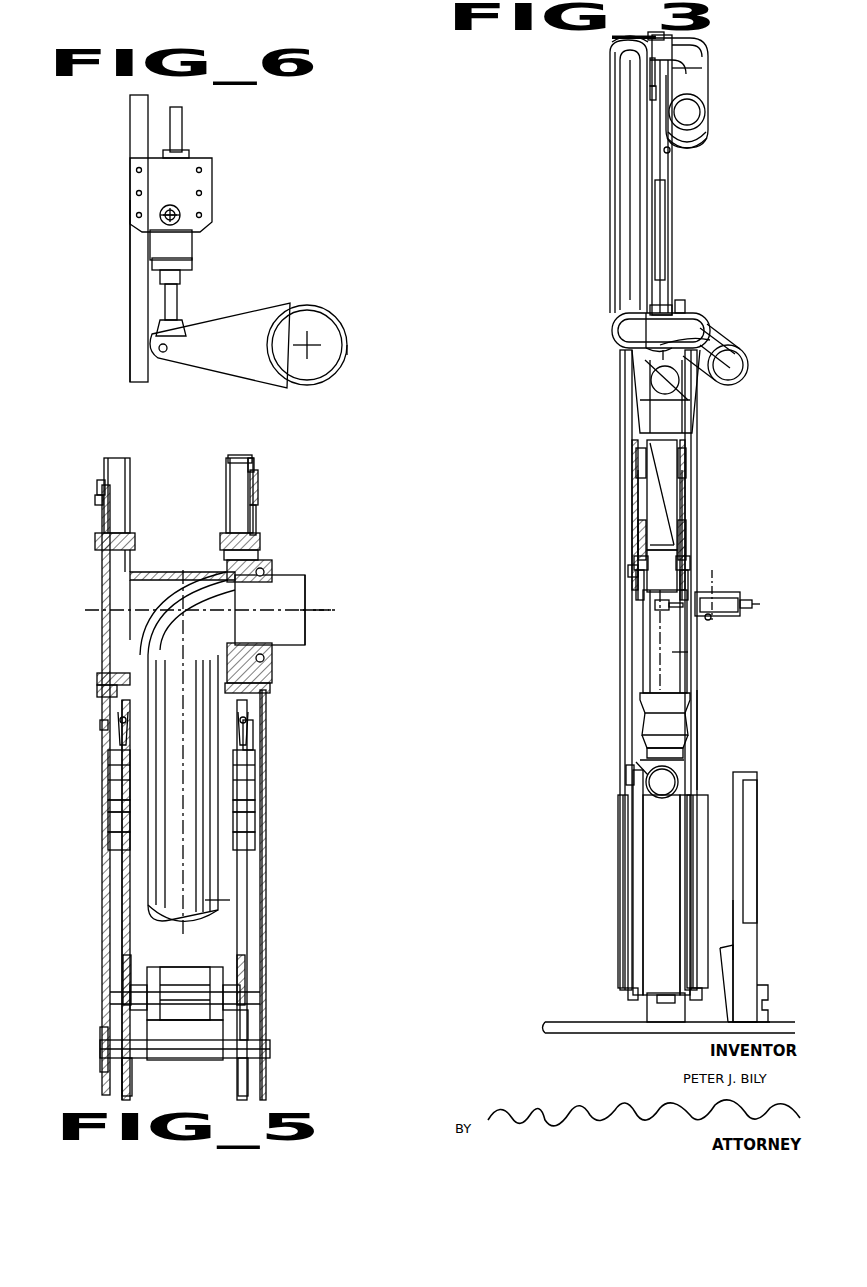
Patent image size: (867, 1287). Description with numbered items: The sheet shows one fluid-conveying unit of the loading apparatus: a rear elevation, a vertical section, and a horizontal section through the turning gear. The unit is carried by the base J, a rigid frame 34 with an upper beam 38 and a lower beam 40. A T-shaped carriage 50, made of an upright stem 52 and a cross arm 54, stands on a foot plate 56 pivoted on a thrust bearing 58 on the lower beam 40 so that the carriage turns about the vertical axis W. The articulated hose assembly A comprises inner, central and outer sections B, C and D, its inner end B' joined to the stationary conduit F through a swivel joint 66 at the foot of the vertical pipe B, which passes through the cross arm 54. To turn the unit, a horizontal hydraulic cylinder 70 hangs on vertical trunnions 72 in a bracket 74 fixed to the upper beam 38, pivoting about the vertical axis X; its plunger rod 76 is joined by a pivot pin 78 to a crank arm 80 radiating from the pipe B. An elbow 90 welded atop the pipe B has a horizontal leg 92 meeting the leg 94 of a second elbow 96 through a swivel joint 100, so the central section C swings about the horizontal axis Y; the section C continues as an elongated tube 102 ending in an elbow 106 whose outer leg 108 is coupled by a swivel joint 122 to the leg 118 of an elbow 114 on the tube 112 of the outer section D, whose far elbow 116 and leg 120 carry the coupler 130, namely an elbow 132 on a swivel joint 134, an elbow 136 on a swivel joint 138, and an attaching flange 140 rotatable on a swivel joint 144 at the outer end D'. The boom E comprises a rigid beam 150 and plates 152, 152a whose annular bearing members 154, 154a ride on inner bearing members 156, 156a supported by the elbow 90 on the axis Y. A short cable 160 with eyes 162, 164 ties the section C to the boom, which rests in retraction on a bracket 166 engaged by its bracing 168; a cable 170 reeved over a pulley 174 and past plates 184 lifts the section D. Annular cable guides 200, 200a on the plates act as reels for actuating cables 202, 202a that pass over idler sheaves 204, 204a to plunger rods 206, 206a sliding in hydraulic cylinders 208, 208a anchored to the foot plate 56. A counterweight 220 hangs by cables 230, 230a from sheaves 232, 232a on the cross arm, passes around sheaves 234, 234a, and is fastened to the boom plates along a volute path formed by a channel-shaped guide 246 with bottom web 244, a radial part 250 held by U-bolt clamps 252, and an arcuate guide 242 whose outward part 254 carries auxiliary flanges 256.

In FIG. 6, the rigid frame 34 is at (128, 121).
In FIG. 3, the rigid frame 34 is at (760, 882).
In FIG. 6, the upper beam 38 is at (140, 297).
In FIG. 3, the lower beam 40 is at (595, 1027).
In FIG. 5, the T-shaped carriage 50 is at (220, 1020).
In FIG. 5, the stem 52 is at (213, 1050).
In FIG. 3, the stem 52 is at (662, 870).
In FIG. 5, the cross arm 54 is at (205, 1025).
In FIG. 3, the cross arm 54 is at (646, 556).
In FIG. 3, the foot plate 56 is at (650, 1010).
In FIG. 3, the thrust bearing 58 is at (664, 995).
In FIG. 3, the swivel joint 66 is at (676, 723).
In FIG. 6, the hydraulic cylinder 70 is at (176, 242).
In FIG. 3, the hydraulic cylinder 70 is at (722, 603).
In FIG. 6, the vertical trunnions 72 is at (160, 214).
In FIG. 3, the vertical trunnions 72 is at (708, 620).
In FIG. 6, the bracket 74 is at (182, 168).
In FIG. 3, the bracket 74 is at (722, 592).
In FIG. 6, the plunger rod 76 is at (172, 302).
In FIG. 3, the plunger rod 76 is at (752, 605).
In FIG. 6, the pivot pin 78 is at (168, 348).
In FIG. 6, the crank arm 80 is at (255, 321).
In FIG. 3, the crank arm 80 is at (650, 610).
In FIG. 5, the 90° elbow 90 is at (160, 608).
In FIG. 5, the horizontal leg 92 is at (218, 578).
In FIG. 5, the horizontal laterally projecting leg 94 is at (272, 580).
In FIG. 5, the 90° elbow 96 is at (306, 625).
In FIG. 5, the swivel joint 100 is at (270, 568).
In FIG. 3, the elongated metal tube 102 is at (745, 364).
In FIG. 3, the elbow 106 is at (702, 328).
In FIG. 3, the outer leg 108 is at (668, 320).
In FIG. 3, the elongated metal tube 112 is at (618, 145).
In FIG. 3, the elbow 114 is at (620, 322).
In FIG. 3, the elbow 116 is at (622, 58).
In FIG. 3, the laterally projecting leg 118 is at (640, 334).
In FIG. 3, the laterally projecting leg 120 is at (625, 38).
In FIG. 3, the swivel joint 122 is at (630, 338).
In FIG. 3, the coupler 130 is at (712, 96).
In FIG. 3, the elbow 132 is at (697, 52).
In FIG. 3, the swivel joint 134 is at (690, 38).
In FIG. 3, the elbow 136 is at (688, 110).
In FIG. 3, the swivel joint 138 is at (690, 76).
In FIG. 3, the attaching flange 140 is at (705, 142).
In FIG. 3, the swivel joint 144 is at (702, 130).
In FIG. 3, the rigid beam 150 is at (663, 215).
In FIG. 5, the plate 152 is at (255, 515).
In FIG. 5, the plate 152a is at (110, 505).
In FIG. 5, the annular bearing member 154 is at (240, 535).
In FIG. 5, the annular bearing member 154a is at (118, 533).
In FIG. 5, the inner bearing member 156 is at (232, 552).
In FIG. 5, the inner bearing member 156a is at (120, 541).
In FIG. 3, the cable 160 is at (670, 236).
In FIG. 3, the eye 162 is at (670, 152).
In FIG. 3, the eye 164 is at (676, 302).
In FIG. 5, the bracket 166 is at (157, 978).
In FIG. 3, the bracket 166 is at (675, 440).
In FIG. 3, the bracing 168 is at (695, 420).
In FIG. 3, the cable 170 is at (650, 70).
In FIG. 3, the pulley 174 is at (650, 92).
In FIG. 3, the plates 184 is at (656, 253).
In FIG. 5, the cable guide 200 is at (258, 500).
In FIG. 3, the cable guide 200 is at (698, 395).
In FIG. 5, the cable guide 200a is at (98, 497).
In FIG. 3, the cable guide 200a is at (620, 392).
In FIG. 5, the actuating cable 202 is at (258, 478).
In FIG. 3, the actuating cable 202 is at (690, 500).
In FIG. 5, the actuating cable 202a is at (103, 482).
In FIG. 3, the actuating cable 202a is at (630, 450).
In FIG. 5, the idler sheave 204 is at (260, 1030).
In FIG. 3, the idler sheave 204 is at (690, 560).
In FIG. 5, the idler sheave 204a is at (103, 1062).
In FIG. 3, the idler sheave 204a is at (630, 572).
In FIG. 3, the plunger rod 206 is at (700, 708).
In FIG. 3, the plunger rod 206a is at (628, 786).
In FIG. 3, the hydraulic cylinder 208 is at (700, 810).
In FIG. 3, the hydraulic cylinder 208a is at (628, 850).
In FIG. 3, the counterweight 220 is at (640, 892).
In FIG. 5, the cable 230 is at (296, 952).
In FIG. 3, the cable 230 is at (686, 490).
In FIG. 5, the cable 230a is at (124, 882).
In FIG. 3, the cable 230a is at (636, 510).
In FIG. 5, the sheave 232 is at (250, 1082).
In FIG. 3, the sheave 232 is at (690, 585).
In FIG. 5, the sheave 232a is at (133, 1075).
In FIG. 3, the sheave 232a is at (638, 580).
In FIG. 5, the sheave 234 is at (247, 978).
In FIG. 3, the sheave 234 is at (688, 525).
In FIG. 5, the sheave 234a is at (133, 975).
In FIG. 3, the sheave 234a is at (636, 532).
In FIG. 5, the cable guide 242 is at (256, 770).
In FIG. 3, the cable guide 242 is at (690, 462).
In FIG. 5, the bottom web 244 is at (240, 468).
In FIG. 5, the channel-shaped guide 246 is at (255, 462).
In FIG. 5, the radially extending part 250 is at (247, 716).
In FIG. 5, the U-bolt clamps 252 is at (250, 754).
In FIG. 5, the outwardly projecting part 254 is at (250, 822).
In FIG. 5, the auxiliary flanges 256 is at (256, 840).
In FIG. 3, the hose assembly A is at (712, 262).
In FIG. 6, the inner hose section B is at (383, 357).
In FIG. 5, the inner hose section B is at (268, 911).
In FIG. 3, the inner hose section B is at (722, 643).
In FIG. 3, the inner end of hose assembly B' is at (702, 641).
In FIG. 3, the central hose section C is at (733, 338).
In FIG. 3, the outer hose section D is at (593, 176).
In FIG. 3, the outer end of hose assembly D' is at (593, 180).
In FIG. 3, the boom E is at (655, 190).
In FIG. 3, the conduit F is at (640, 765).
In FIG. 3, the base J is at (760, 848).
In FIG. 6, the vertical axis W is at (312, 345).
In FIG. 5, the vertical axis W is at (183, 873).
In FIG. 3, the vertical axis W is at (660, 644).
In FIG. 6, the vertical axis X is at (178, 212).
In FIG. 3, the vertical axis X is at (718, 582).
In FIG. 5, the horizontal axis Y is at (305, 608).